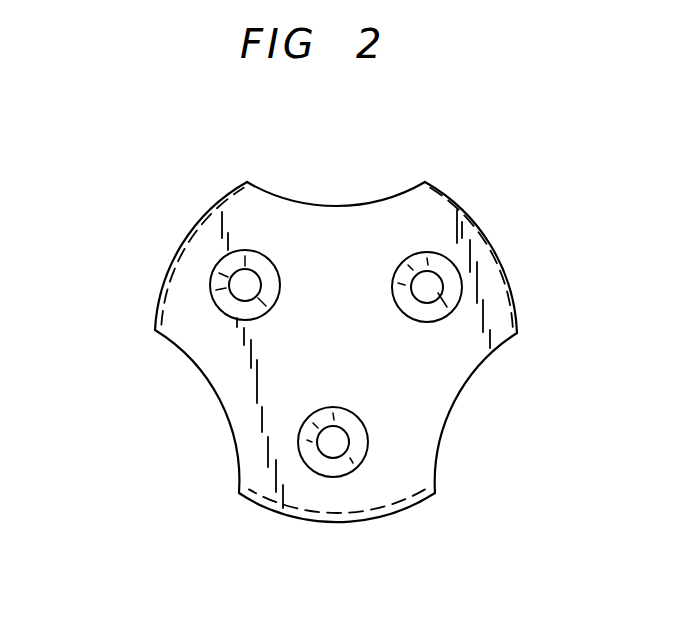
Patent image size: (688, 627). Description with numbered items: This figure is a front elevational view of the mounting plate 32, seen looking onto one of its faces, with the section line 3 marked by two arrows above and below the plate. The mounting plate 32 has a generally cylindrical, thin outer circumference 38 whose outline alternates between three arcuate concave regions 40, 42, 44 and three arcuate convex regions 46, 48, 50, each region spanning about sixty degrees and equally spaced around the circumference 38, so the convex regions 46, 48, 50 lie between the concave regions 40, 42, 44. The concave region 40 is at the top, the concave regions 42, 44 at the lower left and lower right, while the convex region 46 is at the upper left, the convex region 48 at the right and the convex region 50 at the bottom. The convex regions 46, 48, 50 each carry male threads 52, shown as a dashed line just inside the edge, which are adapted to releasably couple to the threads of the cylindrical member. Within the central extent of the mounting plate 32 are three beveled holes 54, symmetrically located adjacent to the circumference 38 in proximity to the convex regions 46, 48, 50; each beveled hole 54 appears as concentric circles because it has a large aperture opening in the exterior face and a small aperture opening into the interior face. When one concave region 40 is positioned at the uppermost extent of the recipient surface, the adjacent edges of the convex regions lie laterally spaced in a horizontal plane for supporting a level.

The section line 3- 3 is at (300, 125).
The mounting plate 32 is at (333, 335).
The outer circumference 38 is at (239, 493).
The arcuate concave region 40 is at (355, 206).
The arcuate concave region 42 is at (193, 367).
The arcuate concave region 44 is at (468, 385).
The arcuate convex region 46 is at (205, 215).
The arcuate convex region 48 is at (488, 237).
The arcuate convex region 50 is at (385, 516).
The male threads 52 is at (507, 279).
The beveled holes 54 is at (240, 284).